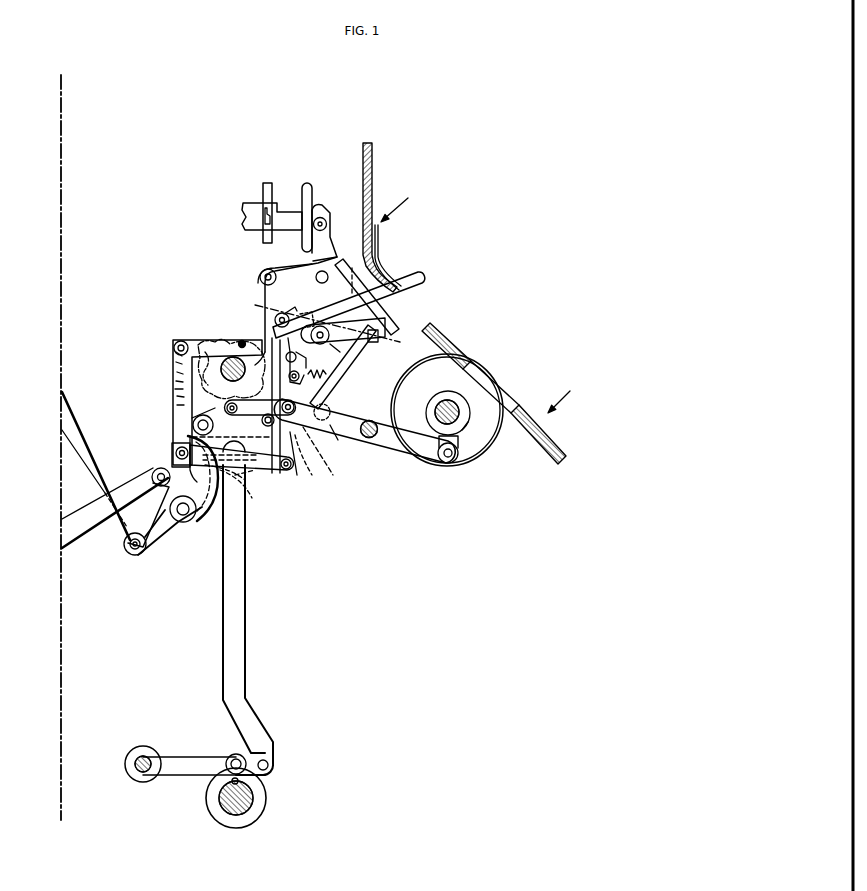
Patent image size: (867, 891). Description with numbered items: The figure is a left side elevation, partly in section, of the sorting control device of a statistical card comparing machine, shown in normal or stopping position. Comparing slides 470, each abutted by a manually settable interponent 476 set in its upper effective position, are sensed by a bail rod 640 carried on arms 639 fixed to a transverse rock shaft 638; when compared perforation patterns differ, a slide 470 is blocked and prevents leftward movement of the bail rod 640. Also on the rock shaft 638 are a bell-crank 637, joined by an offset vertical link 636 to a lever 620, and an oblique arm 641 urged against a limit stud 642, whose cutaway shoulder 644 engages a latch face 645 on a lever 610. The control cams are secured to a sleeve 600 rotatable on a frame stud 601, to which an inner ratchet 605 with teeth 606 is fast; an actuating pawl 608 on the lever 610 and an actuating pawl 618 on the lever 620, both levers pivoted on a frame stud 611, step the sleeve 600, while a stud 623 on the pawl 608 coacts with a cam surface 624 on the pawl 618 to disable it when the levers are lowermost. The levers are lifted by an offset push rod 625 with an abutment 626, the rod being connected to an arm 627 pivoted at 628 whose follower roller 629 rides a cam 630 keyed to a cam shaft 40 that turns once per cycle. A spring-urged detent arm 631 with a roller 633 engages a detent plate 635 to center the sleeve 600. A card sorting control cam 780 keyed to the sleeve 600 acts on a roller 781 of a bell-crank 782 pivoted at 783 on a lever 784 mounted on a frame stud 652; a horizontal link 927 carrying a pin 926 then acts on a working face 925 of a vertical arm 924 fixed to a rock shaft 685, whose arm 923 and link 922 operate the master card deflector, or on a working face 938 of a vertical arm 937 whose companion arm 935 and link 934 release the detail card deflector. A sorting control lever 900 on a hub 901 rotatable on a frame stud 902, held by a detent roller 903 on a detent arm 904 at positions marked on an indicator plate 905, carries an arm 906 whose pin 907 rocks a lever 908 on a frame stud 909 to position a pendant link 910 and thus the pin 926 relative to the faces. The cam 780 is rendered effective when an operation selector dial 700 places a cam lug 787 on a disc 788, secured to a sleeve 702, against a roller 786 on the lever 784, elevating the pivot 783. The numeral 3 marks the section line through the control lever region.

The section line arrow 3 is at (481, 297).
The cam shaft 40 is at (235, 810).
The comparing slide 470 is at (258, 206).
The interponent 476 is at (311, 218).
The sleeve 600 is at (176, 344).
The stud 601 is at (177, 349).
The inner ratchet 605 is at (176, 362).
The teeth 606 is at (176, 352).
The actuating pawl 608 is at (176, 381).
The lever 610 is at (345, 340).
The frame stud 611 is at (309, 433).
The actuating pawl 618 is at (177, 405).
The lever 620 is at (322, 445).
The stud 623 is at (175, 389).
The cam surface 624 is at (177, 396).
The push rod 625 is at (240, 650).
The abutment 626 is at (243, 490).
The arm 627 is at (177, 762).
The pivot 628 is at (143, 778).
The follower roller 629 is at (230, 756).
The cam 630 is at (262, 794).
The detent arm 631 is at (238, 335).
The roller 633 is at (212, 336).
The detent plate 635 is at (197, 413).
The vertical link 636 is at (259, 278).
The bell-crank 637 is at (292, 270).
The rock shaft 638 is at (326, 266).
The arms 639 is at (326, 236).
The bail rod 640 is at (320, 217).
The oblique arm 641 is at (402, 296).
The limit stud 642 is at (329, 276).
The cutaway shoulder 644 is at (404, 309).
The latch face 645 is at (432, 318).
The frame stud 652 is at (377, 438).
The rock shaft 685 is at (183, 520).
The operation selector dial 700 is at (484, 367).
The sleeve 702 is at (456, 410).
The card sorting control cam 780 is at (208, 401).
The roller 781 is at (226, 420).
The bell-crank 782 is at (296, 430).
The pivot 783 is at (298, 426).
The lever 784 is at (342, 428).
The roller 786 is at (444, 462).
The cam lug 787 is at (466, 455).
The disc 788 is at (464, 423).
The sorting control lever 900 is at (410, 281).
The hub 901 is at (340, 352).
The frame stud 902 is at (329, 336).
The detent roller 903 is at (350, 378).
The detent arm 904 is at (306, 366).
The indicator plate 905 is at (374, 261).
The arm 906 is at (306, 318).
The pin 907 is at (282, 313).
The lever 908 is at (198, 343).
The frame stud 909 is at (240, 339).
The pendant link 910 is at (177, 372).
The link 922 is at (129, 552).
The arm 923 is at (157, 536).
The vertical arm 924 is at (213, 500).
The working face 925 is at (177, 448).
The pin 926 is at (176, 454).
The horizontal link 927 is at (238, 478).
The link 934 is at (95, 519).
The arm 935 is at (167, 492).
The vertical arm 937 is at (246, 500).
The working face 938 is at (153, 475).